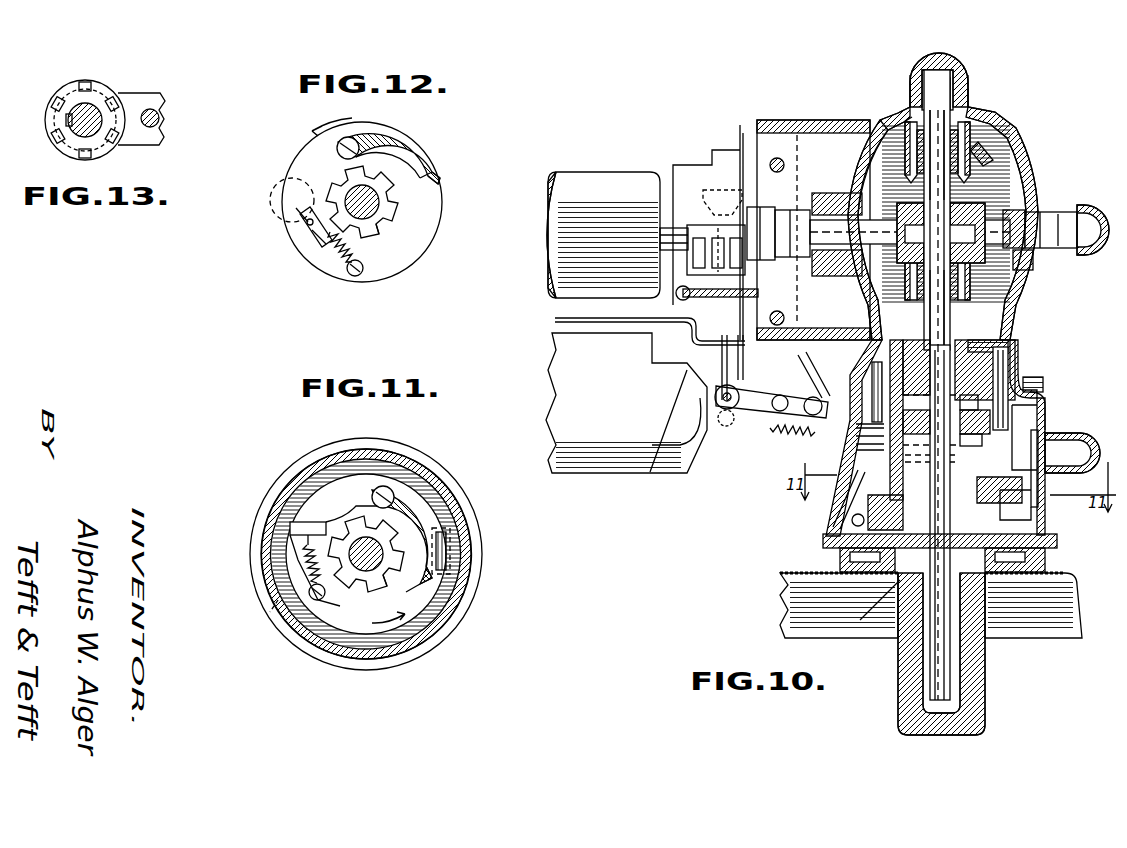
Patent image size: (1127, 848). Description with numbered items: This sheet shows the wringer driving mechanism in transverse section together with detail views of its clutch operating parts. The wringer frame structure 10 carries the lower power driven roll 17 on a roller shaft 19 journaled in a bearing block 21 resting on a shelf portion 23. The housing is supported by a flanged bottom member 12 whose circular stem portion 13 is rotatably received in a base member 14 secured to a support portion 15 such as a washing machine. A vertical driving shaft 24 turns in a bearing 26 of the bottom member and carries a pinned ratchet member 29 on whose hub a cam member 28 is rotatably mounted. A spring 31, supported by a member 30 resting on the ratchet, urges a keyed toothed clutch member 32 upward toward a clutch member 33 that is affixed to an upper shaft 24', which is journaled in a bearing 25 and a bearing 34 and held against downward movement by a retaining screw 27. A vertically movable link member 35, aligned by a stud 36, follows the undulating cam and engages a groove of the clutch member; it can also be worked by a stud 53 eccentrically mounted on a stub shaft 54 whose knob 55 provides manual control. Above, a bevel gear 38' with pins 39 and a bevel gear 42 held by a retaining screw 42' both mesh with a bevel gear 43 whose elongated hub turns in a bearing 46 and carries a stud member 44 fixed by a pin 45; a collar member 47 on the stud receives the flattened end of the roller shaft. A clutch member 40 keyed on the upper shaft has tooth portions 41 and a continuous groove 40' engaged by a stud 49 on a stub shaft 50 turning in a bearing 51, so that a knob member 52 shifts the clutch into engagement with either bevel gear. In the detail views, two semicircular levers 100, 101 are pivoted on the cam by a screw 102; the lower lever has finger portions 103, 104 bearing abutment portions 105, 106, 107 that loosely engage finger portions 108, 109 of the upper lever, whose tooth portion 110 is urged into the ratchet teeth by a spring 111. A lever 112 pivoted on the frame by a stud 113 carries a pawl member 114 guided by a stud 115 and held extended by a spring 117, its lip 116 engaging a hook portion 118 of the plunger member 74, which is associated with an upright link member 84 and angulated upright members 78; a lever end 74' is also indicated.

In FIG. 10, the wringer frame structure 10 is at (644, 299).
In FIG. 10, the flanged bottom member 12 is at (1056, 540).
In FIG. 10, the circular stem or boss portion 13 is at (962, 655).
In FIG. 10, the base member 14 is at (1046, 568).
In FIG. 10, the support portion 15 is at (931, 605).
In FIG. 10, the lower power driven wringer roll 17 is at (603, 235).
In FIG. 10, the roller shaft 19 is at (672, 232).
In FIG. 10, the bearing block 21 is at (688, 218).
In FIG. 10, the shelf portion 23 is at (688, 290).
In FIG. 13, the driving shaft 24 is at (107, 100).
In FIG. 12, the driving shaft 24 is at (408, 202).
In FIG. 11, the driving shaft 24 is at (426, 524).
In FIG. 10, the driving shaft 24 is at (933, 417).
In FIG. 10, the upper shaft 24' is at (1004, 217).
In FIG. 10, the bearing 25 is at (958, 108).
In FIG. 10, the bearing 26 is at (860, 620).
In FIG. 10, the retaining screw 27 is at (966, 88).
In FIG. 12, the cam member 28 is at (430, 236).
In FIG. 11, the cam member 28 is at (400, 478).
In FIG. 10, the cam member 28 is at (1000, 500).
In FIG. 12, the ratchet member 29 is at (400, 200).
In FIG. 11, the ratchet member 29 is at (404, 556).
In FIG. 10, the ratchet member 29 is at (988, 440).
In FIG. 10, the spring supporting member 30 is at (978, 446).
In FIG. 10, the spring 31 is at (976, 438).
In FIG. 13, the keyed toothed clutch member 32 is at (70, 86).
In FIG. 10, the keyed toothed clutch member 32 is at (1040, 398).
In FIG. 10, the clutch member 33 is at (1010, 365).
In FIG. 10, the bearing 34 is at (1012, 346).
In FIG. 13, the link member 35 is at (146, 138).
In FIG. 11, the link member 35 is at (450, 540).
In FIG. 13, the stud 36 is at (158, 114).
In FIG. 10, the stud 36 is at (1043, 382).
In FIG. 10, the bevel gear 38' is at (991, 287).
In FIG. 10, the pins 39 is at (962, 150).
In FIG. 10, the clutch member 40 is at (980, 215).
In FIG. 10, the continuous groove 40' is at (986, 200).
In FIG. 10, the tooth portions 41 is at (1002, 165).
In FIG. 10, the bevel gear 42 is at (980, 151).
In FIG. 10, the retaining screw 42' is at (1005, 135).
In FIG. 10, the bevel gear 43 is at (872, 178).
In FIG. 10, the stud member 44 is at (910, 232).
In FIG. 10, the pin 45 is at (848, 276).
In FIG. 10, the bearing 46 is at (810, 282).
In FIG. 10, the collar member 47 is at (790, 208).
In FIG. 10, the stud 49 is at (1018, 212).
In FIG. 10, the stub shaft 50 is at (1060, 230).
In FIG. 10, the bearing 51 is at (1040, 262).
In FIG. 10, the knob member 52 is at (1092, 222).
In FIG. 10, the stud 53 is at (1044, 430).
In FIG. 10, the stub shaft 54 is at (1070, 436).
In FIG. 10, the knob 55 is at (1062, 468).
In FIG. 12, the plunger member 74 is at (277, 200).
In FIG. 11, the plunger member 74 is at (253, 615).
In FIG. 10, the plunger member 74 is at (839, 499).
In FIG. 10, the lever spring 74' is at (853, 442).
In FIG. 10, the angulated upright members 78 is at (724, 345).
In FIG. 10, the upright link member 84 is at (738, 366).
In FIG. 12, the lever 100 is at (404, 160).
In FIG. 11, the lever 100 is at (355, 500).
In FIG. 12, the lever 101 is at (380, 158).
In FIG. 11, the lever 101 is at (350, 510).
In FIG. 12, the screw 102 is at (337, 148).
In FIG. 11, the screw 102 is at (394, 500).
In FIG. 12, the finger portion 103 is at (432, 175).
In FIG. 12, the finger portion 104 is at (318, 236).
In FIG. 11, the finger portion 104 is at (292, 536).
In FIG. 12, the abutment portion 105 is at (302, 216).
In FIG. 11, the abutment portion 105 is at (300, 518).
In FIG. 12, the abutment portion 106 is at (347, 266).
In FIG. 11, the abutment portion 106 is at (310, 590).
In FIG. 10, the abutment portion 106 is at (852, 520).
In FIG. 12, the abutment portion 107 is at (436, 178).
In FIG. 11, the abutment portion 107 is at (432, 576).
In FIG. 12, the finger portion 108 is at (308, 224).
In FIG. 11, the finger portion 108 is at (306, 526).
In FIG. 12, the finger portion 109 is at (440, 180).
In FIG. 11, the finger portion 109 is at (425, 588).
In FIG. 12, the tooth portion 110 is at (338, 250).
In FIG. 11, the tooth portion 110 is at (305, 556).
In FIG. 12, the spring 111 is at (370, 232).
In FIG. 11, the spring 111 is at (372, 586).
In FIG. 10, the lever 112 is at (756, 420).
In FIG. 10, the stud 113 is at (816, 370).
In FIG. 10, the pawl member 114 is at (776, 436).
In FIG. 10, the stud 115 is at (780, 394).
In FIG. 10, the lip 116 is at (816, 396).
In FIG. 10, the spring 117 is at (795, 434).
In FIG. 10, the hook portion 118 is at (874, 376).